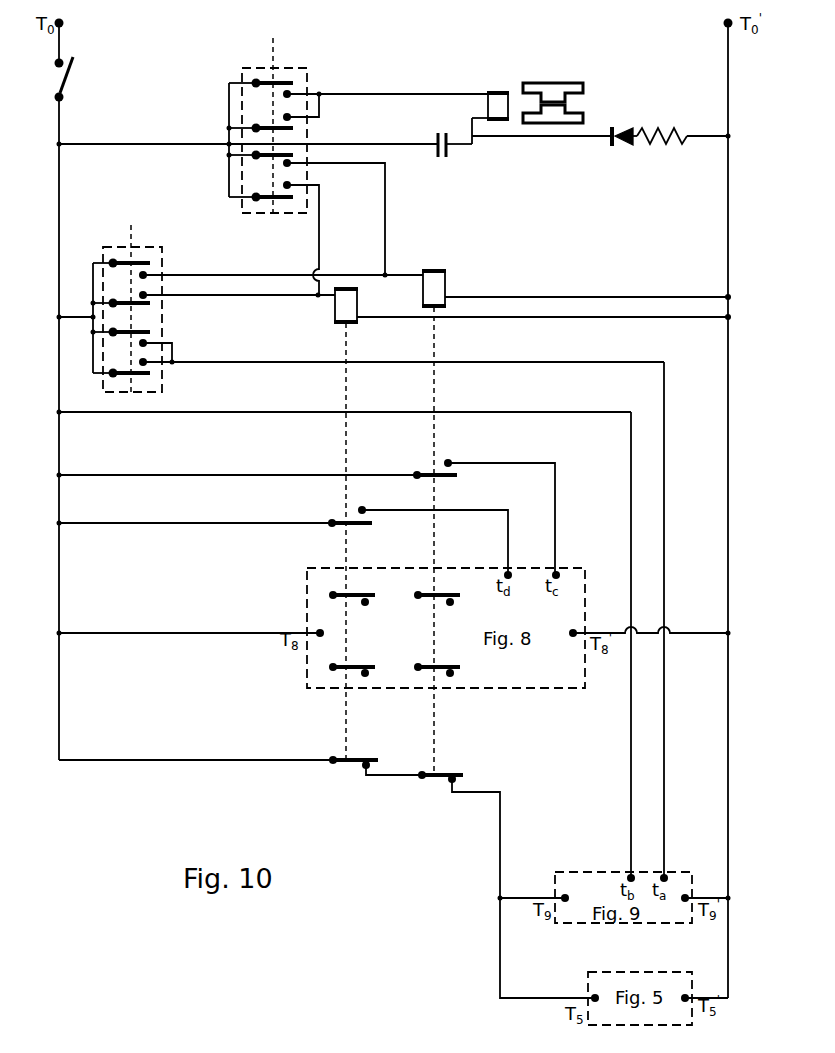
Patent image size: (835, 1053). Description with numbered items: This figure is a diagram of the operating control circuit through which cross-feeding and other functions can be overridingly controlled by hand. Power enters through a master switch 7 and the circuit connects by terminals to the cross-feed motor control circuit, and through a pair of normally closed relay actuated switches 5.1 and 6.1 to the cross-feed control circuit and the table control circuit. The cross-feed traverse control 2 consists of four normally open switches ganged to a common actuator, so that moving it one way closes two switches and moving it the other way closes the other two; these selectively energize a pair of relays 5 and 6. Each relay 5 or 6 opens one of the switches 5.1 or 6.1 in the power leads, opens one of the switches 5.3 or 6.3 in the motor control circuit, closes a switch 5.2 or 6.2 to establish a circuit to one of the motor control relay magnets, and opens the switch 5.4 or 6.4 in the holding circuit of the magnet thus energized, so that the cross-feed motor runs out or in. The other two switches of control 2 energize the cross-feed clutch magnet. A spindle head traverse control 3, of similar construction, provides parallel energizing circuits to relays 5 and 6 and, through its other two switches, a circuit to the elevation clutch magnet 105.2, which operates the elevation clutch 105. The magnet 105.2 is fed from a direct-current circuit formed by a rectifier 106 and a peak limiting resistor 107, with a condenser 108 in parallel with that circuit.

The master switch 7 is at (67, 80).
The spindle head traverse control 3 is at (303, 69).
The cross-feed traverse control 2 is at (169, 262).
The relay 5 is at (350, 306).
The relay 6 is at (432, 292).
The elevation clutch 105 is at (544, 84).
The elevation clutch magnet 105.2 is at (498, 90).
The rectifier 106 is at (625, 127).
The peak limiting resistor 107 is at (670, 147).
The condenser 108 is at (449, 158).
The switch 6.2 is at (451, 481).
The switch 5.2 is at (359, 529).
The switch 5.3 is at (358, 602).
The switch 6.3 is at (443, 602).
The switch 5.4 is at (357, 663).
The switch 6.4 is at (437, 663).
The normally closed relay actuated switch 5.1 is at (355, 768).
The normally closed relay actuated switch 6.1 is at (440, 787).